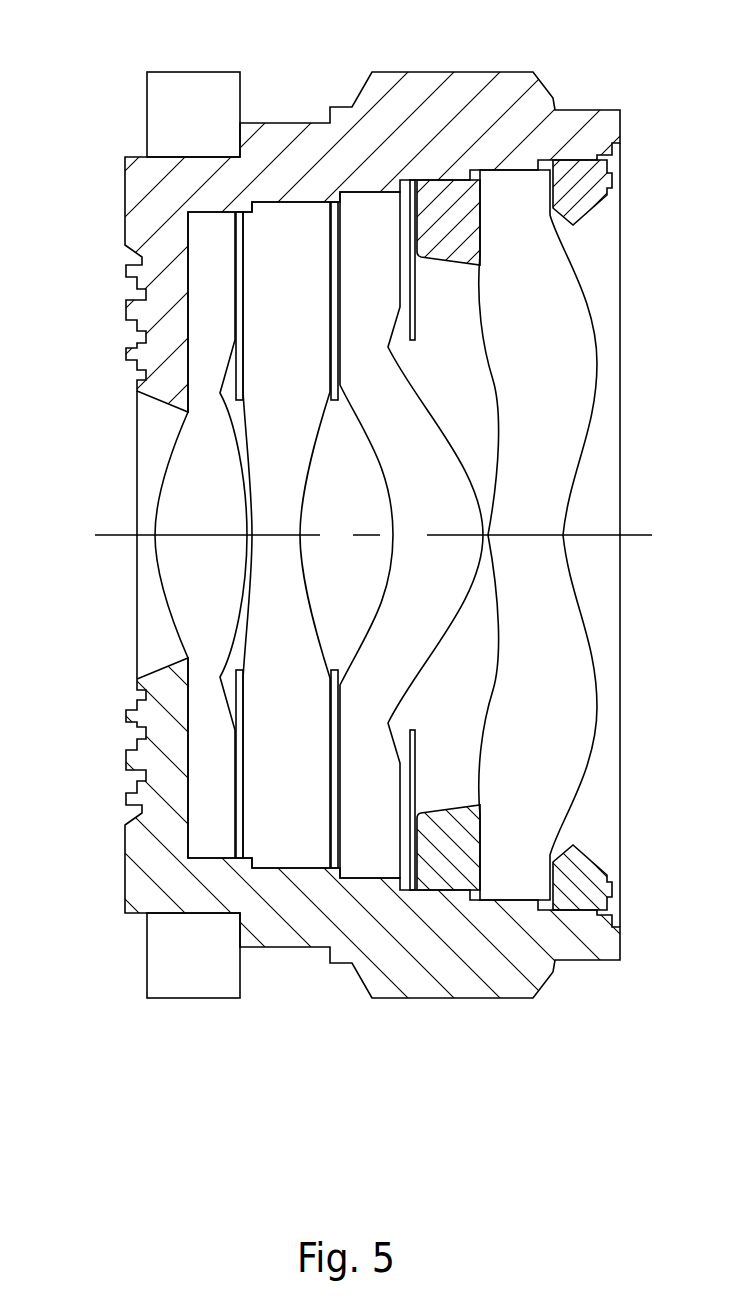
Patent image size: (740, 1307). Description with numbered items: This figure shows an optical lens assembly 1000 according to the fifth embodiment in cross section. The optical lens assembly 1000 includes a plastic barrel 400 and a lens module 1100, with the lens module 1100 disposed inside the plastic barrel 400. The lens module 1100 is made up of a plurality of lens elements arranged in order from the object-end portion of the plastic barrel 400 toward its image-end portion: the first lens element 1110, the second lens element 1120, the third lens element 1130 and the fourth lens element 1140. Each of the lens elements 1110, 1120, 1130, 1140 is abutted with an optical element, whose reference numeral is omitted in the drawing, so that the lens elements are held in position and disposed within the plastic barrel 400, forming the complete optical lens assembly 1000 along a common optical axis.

The optical lens assembly 1000 is at (107, 28).
The plastic barrel 400 is at (287, 137).
The lens module 1100 is at (573, 1083).
The first lens element 1110 is at (213, 840).
The second lens element 1120 is at (288, 842).
The third lens element 1130 is at (372, 842).
The fourth lens element 1140 is at (512, 870).